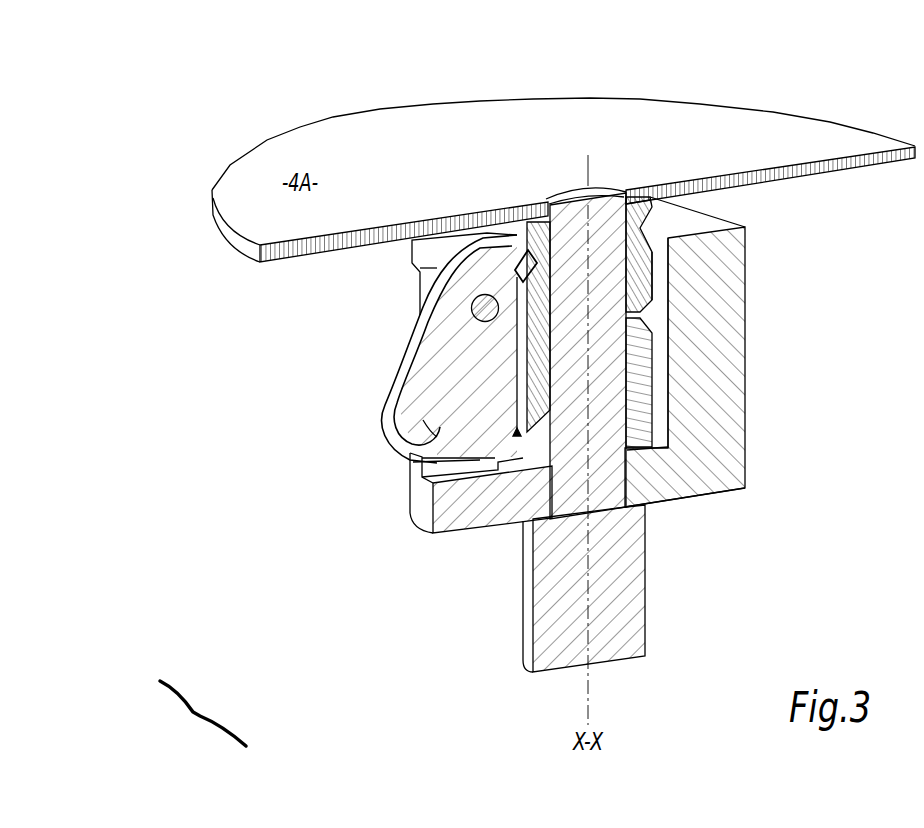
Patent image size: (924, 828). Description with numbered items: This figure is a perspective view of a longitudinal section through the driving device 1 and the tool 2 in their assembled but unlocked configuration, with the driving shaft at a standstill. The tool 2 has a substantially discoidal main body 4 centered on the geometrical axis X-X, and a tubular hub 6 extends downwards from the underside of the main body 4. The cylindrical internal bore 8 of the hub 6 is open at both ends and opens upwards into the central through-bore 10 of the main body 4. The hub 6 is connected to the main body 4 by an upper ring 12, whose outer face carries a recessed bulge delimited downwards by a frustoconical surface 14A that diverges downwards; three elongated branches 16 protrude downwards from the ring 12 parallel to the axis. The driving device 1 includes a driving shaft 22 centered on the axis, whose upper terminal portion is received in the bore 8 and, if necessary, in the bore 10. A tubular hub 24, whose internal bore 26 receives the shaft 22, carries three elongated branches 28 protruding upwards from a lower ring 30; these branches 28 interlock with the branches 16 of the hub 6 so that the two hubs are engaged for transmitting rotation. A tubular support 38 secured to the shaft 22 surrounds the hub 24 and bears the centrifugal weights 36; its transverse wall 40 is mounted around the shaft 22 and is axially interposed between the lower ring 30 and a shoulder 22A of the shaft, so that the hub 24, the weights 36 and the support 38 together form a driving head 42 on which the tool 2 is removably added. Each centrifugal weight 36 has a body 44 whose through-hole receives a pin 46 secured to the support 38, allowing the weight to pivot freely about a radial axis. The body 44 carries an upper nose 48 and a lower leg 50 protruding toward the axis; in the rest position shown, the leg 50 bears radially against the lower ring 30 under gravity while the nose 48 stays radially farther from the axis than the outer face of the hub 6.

The driving device 1 is at (203, 715).
The tool 2 is at (492, 191).
The main body 4 is at (240, 258).
The hub 6 is at (663, 286).
The cylindrical internal bore 8 is at (643, 277).
The central through-bore 10 is at (622, 190).
The upper ring 12 is at (650, 226).
The frustoconical surface 14A is at (520, 243).
The elongated branches 16 is at (533, 343).
The driving shaft 22 is at (512, 624).
The shoulder 22A is at (647, 483).
The hub 24 is at (663, 366).
The internal bore 26 is at (610, 408).
The elongated branches 28 is at (617, 412).
The lower ring 30 is at (637, 423).
The centrifugal weights 36 is at (362, 408).
The support 38 is at (712, 317).
The transverse wall 40 is at (453, 517).
The head 42 is at (390, 503).
The body 44 is at (410, 452).
The pin 46 is at (497, 314).
The upper nose 48 is at (455, 252).
The lower leg 50 is at (518, 457).